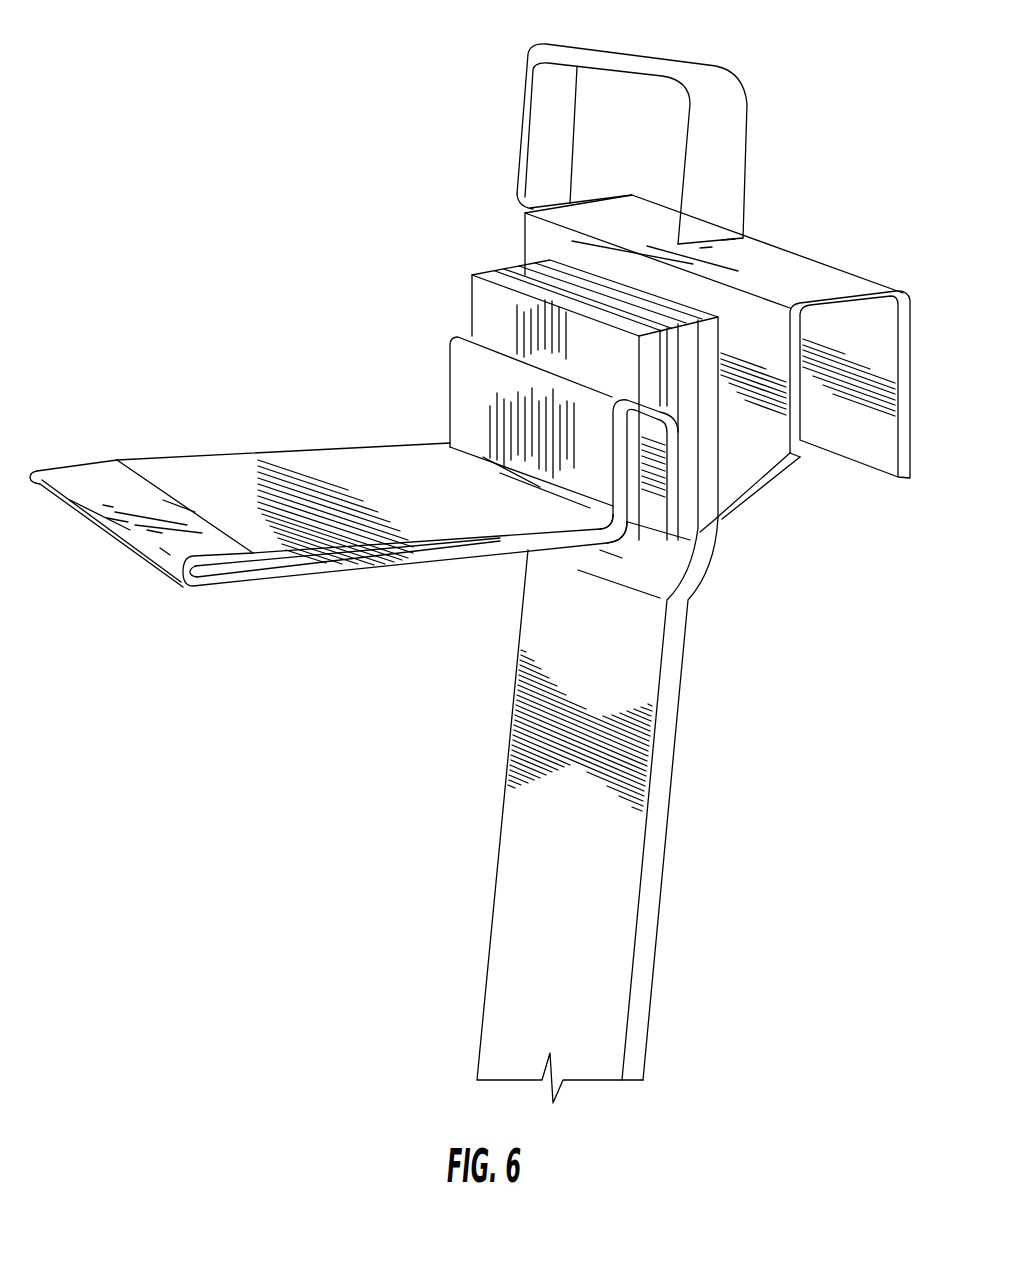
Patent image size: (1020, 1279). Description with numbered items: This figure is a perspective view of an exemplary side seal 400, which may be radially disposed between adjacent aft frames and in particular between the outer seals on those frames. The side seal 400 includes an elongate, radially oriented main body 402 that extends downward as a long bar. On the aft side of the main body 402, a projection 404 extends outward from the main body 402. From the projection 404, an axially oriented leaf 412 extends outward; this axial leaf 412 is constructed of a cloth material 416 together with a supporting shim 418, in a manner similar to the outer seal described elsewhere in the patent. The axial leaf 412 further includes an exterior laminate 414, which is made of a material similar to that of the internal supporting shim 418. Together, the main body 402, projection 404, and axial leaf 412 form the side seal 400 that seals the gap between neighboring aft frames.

The side seal 400 is at (830, 192).
The main body 402 is at (537, 882).
The projection 404 is at (430, 323).
The axially oriented leaf 412 is at (395, 473).
The exterior laminate 414 is at (90, 478).
The cloth material 416 is at (331, 566).
The supporting shim 418 is at (400, 557).